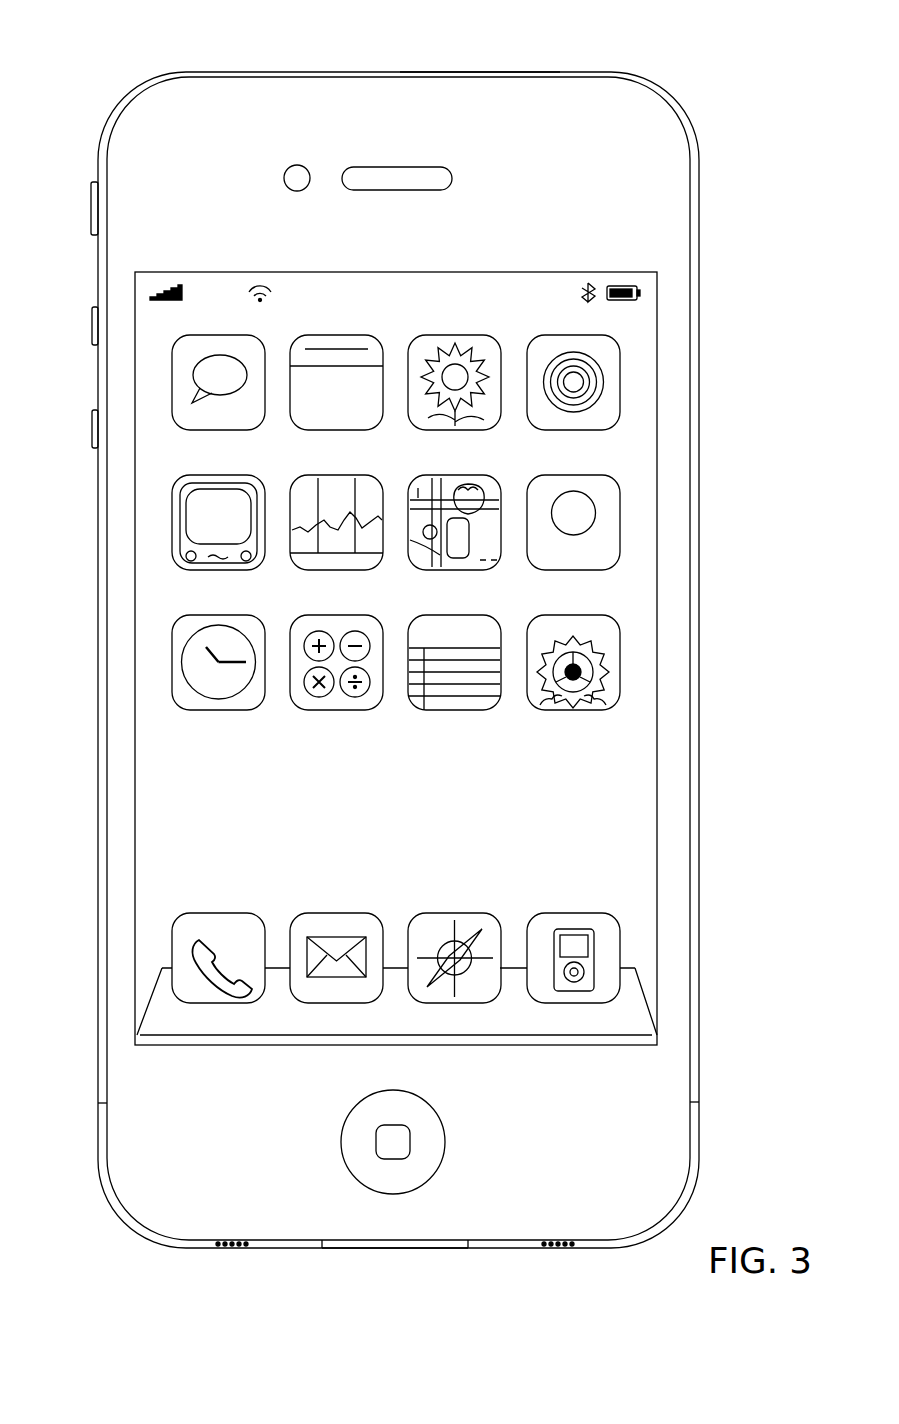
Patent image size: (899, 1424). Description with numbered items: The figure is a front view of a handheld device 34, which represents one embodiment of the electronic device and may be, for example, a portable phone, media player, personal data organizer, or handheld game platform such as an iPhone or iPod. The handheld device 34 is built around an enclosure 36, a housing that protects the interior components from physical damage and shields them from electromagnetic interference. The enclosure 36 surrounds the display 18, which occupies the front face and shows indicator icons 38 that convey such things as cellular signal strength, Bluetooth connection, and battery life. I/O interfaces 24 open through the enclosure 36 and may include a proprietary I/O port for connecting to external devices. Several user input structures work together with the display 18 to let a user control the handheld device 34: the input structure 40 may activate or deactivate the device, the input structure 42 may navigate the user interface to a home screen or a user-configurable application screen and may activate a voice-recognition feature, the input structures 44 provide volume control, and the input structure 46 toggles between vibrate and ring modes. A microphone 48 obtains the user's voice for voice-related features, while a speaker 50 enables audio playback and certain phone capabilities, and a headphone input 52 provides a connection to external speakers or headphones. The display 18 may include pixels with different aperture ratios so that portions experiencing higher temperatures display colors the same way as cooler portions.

The display 18 is at (665, 624).
The I/O interfaces 24 is at (378, 1248).
The handheld device 34 is at (186, 27).
The enclosure 36 is at (699, 266).
The indicator icons 38 is at (180, 286).
The input structure 40 is at (530, 72).
The input structure 42 is at (447, 1143).
The input structures 44 is at (92, 312).
The input structure 46 is at (92, 216).
The microphone 48 is at (415, 167).
The speaker 50 is at (560, 1247).
The headphone input 52 is at (258, 72).